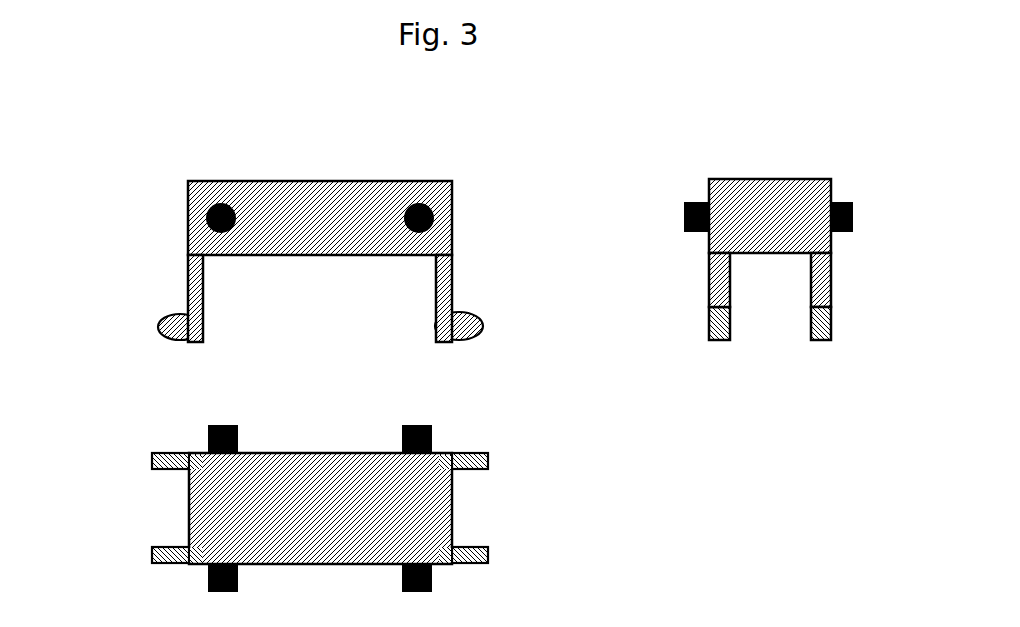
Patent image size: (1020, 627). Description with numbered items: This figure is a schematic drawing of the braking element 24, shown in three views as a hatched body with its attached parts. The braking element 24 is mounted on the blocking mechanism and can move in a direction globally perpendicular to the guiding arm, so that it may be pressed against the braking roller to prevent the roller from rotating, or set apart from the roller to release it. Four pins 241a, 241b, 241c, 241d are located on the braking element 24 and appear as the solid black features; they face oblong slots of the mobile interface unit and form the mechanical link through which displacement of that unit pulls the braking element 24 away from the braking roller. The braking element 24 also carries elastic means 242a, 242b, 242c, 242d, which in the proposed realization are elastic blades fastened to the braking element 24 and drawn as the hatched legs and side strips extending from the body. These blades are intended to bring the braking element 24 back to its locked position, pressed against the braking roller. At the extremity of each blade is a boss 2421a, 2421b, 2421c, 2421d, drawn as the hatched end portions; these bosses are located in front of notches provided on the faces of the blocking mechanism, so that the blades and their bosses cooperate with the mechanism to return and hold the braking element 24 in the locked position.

The braking element 24 is at (752, 202).
The pin 241a is at (222, 203).
The pin 241b is at (684, 220).
The pin 241c is at (225, 425).
The pin 241d is at (413, 425).
The elastic means 242a is at (190, 297).
The elastic means 242b is at (709, 288).
The elastic means 242c is at (200, 465).
The elastic means 242d is at (811, 298).
The boss 2421a is at (167, 337).
The boss 2421b is at (715, 330).
The boss 2421c is at (163, 470).
The boss 2421d is at (831, 320).